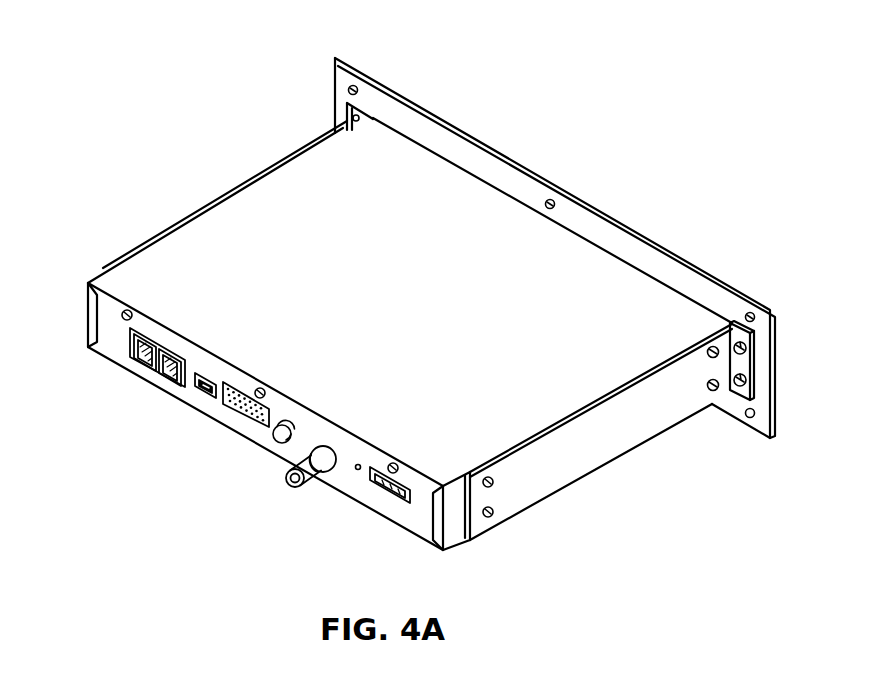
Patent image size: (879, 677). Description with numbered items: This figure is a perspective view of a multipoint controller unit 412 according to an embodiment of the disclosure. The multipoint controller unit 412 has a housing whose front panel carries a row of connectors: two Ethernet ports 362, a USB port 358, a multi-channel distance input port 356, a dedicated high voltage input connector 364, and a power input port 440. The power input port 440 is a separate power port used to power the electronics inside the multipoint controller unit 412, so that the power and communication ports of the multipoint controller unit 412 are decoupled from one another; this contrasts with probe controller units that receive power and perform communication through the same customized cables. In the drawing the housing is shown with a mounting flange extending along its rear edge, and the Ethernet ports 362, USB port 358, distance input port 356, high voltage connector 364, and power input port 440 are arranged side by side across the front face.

The multipoint controller unit 412 is at (402, 291).
The Ethernet ports 362 is at (120, 369).
The USB port 358 is at (186, 404).
The multi-channel distance input port 356 is at (233, 433).
The dedicated high voltage input connector 364 is at (274, 496).
The power input port 440 is at (373, 506).